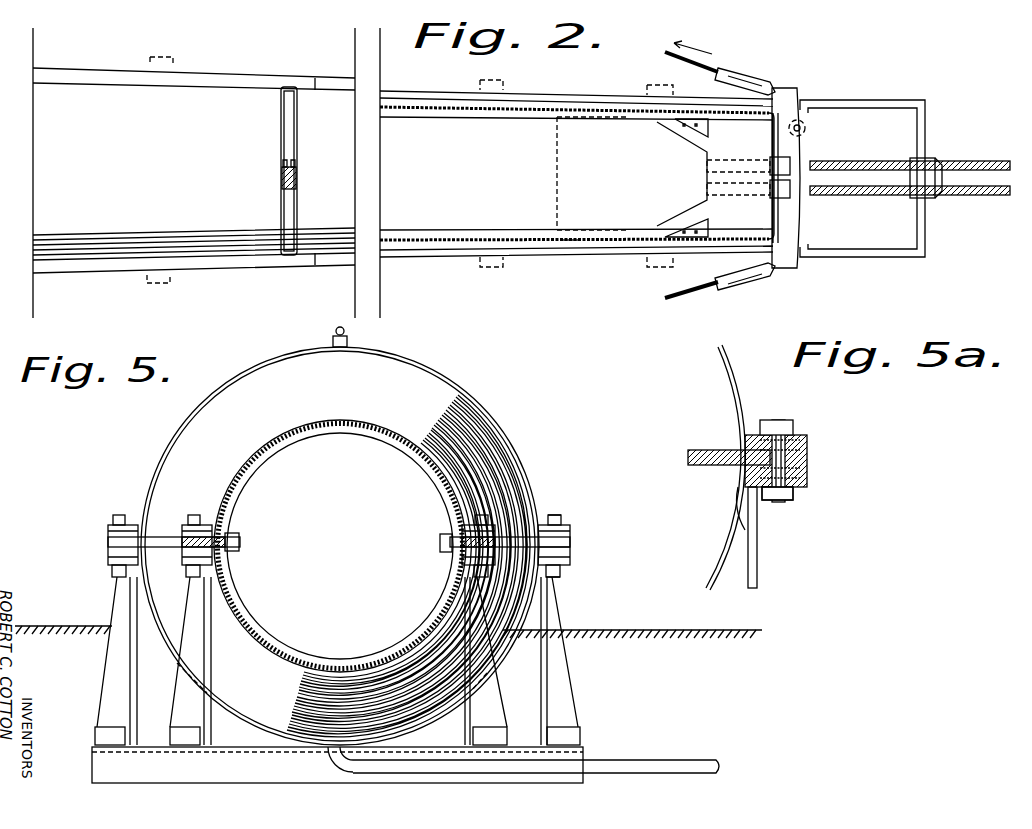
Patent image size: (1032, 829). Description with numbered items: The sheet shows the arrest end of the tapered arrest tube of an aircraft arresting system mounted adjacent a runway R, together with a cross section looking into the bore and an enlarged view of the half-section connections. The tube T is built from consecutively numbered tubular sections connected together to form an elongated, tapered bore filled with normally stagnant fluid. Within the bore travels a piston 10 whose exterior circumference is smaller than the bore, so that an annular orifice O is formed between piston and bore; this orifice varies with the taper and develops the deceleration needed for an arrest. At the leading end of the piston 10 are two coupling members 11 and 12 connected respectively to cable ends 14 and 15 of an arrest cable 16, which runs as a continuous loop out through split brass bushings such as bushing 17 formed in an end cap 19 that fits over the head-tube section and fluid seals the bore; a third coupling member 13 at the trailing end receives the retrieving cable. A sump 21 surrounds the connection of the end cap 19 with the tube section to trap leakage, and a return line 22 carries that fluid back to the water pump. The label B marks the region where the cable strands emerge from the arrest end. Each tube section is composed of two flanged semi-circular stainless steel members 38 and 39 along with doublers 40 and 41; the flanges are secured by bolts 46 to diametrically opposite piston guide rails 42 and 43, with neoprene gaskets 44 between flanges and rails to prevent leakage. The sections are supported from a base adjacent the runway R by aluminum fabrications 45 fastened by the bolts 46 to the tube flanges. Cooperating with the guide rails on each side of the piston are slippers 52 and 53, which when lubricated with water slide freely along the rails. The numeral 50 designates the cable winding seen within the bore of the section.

In FIG. 2, the tube T is at (527, 104).
In FIG. 5, the tube T is at (492, 385).
In FIG. 2, the annular orifice O is at (572, 243).
In FIG. 5, the annular orifice O is at (398, 432).
In FIG. 2, the brace cable B is at (693, 240).
In FIG. 5, the runway R is at (405, 749).
In FIG. 2, the piston 10 is at (598, 215).
In FIG. 5, the piston 10 is at (268, 448).
In FIG. 2, the coupling member 11 is at (730, 160).
In FIG. 2, the coupling member 12 is at (722, 192).
In FIG. 2, the third coupling member 13 is at (553, 170).
In FIG. 2, the cable end 14 is at (865, 163).
In FIG. 2, the cable end 15 is at (890, 193).
In FIG. 2, the arrest cable 16 is at (790, 203).
In FIG. 2, the split brass bushing 17 is at (788, 163).
In FIG. 2, the end cap 19 is at (778, 110).
In FIG. 2, the sump 21 is at (900, 232).
In FIG. 2, the return line 22 is at (803, 127).
In FIG. 5, the flanged semi-circular member 38 is at (303, 422).
In FIG. 5A, the flanged semi-circular member 38 is at (730, 380).
In FIG. 5A, the flanged semi-circular member 39 is at (740, 527).
In FIG. 5, the doubler 40 is at (570, 532).
In FIG. 5A, the doubler 40 is at (803, 437).
In FIG. 5, the doubler 41 is at (570, 557).
In FIG. 5A, the doubler 41 is at (798, 490).
In FIG. 2, the piston guide rail 42 is at (440, 230).
In FIG. 5, the piston guide rail 42 is at (160, 537).
In FIG. 5, the piston guide rail 43 is at (440, 540).
In FIG. 5A, the piston guide rail 43 is at (717, 452).
In FIG. 5, the neoprene gasket 44 is at (570, 538).
In FIG. 5A, the neoprene gasket 44 is at (808, 467).
In FIG. 2, the aluminum fabrication 45 is at (452, 113).
In FIG. 5, the aluminum fabrication 45 is at (492, 687).
In FIG. 5A, the aluminum fabrication 45 is at (757, 575).
In FIG. 5, the bolt 46 is at (560, 513).
In FIG. 5A, the bolt 46 is at (777, 437).
In FIG. 5, the cable winding 50 is at (525, 602).
In FIG. 5, the slipper 52 is at (240, 548).
In FIG. 5, the slipper 53 is at (452, 550).